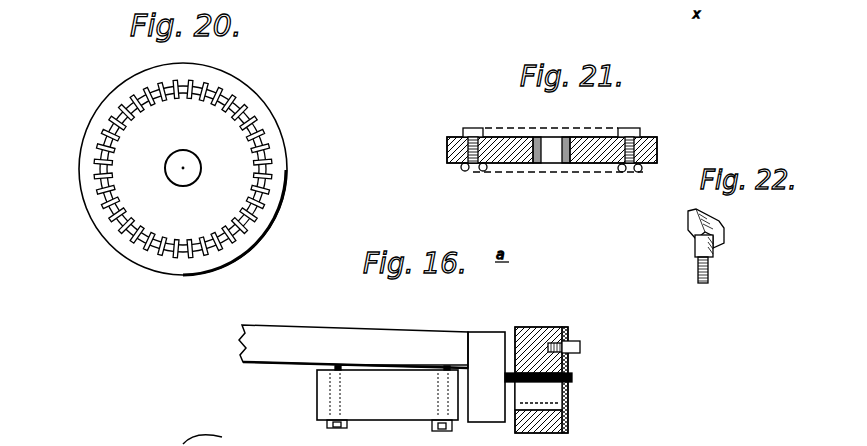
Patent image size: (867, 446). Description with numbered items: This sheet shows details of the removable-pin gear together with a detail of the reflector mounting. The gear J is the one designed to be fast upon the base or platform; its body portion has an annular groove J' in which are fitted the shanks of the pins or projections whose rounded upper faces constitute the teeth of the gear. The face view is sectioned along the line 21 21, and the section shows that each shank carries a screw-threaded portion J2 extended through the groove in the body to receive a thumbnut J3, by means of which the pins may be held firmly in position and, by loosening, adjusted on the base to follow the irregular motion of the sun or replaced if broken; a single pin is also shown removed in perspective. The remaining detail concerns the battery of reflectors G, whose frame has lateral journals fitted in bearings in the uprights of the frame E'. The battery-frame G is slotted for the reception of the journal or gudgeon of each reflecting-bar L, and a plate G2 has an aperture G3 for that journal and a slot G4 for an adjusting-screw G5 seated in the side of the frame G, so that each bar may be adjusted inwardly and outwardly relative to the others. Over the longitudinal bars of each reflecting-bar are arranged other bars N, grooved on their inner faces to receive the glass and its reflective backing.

In FIG. 20, the gear J is at (183, 169).
In FIG. 22, the gear J is at (672, 251).
In FIG. 20, the annular groove J' is at (207, 180).
In FIG. 21, the annular groove J' is at (556, 130).
In FIG. 22, the annular groove J' is at (724, 228).
In FIG. 20, the section line 21 is at (97, 158).
In FIG. 21, the thumbnuts J3 is at (640, 172).
In FIG. 22, the screw-threaded portion J2 is at (710, 272).
In FIG. 16A, the reflecting-bar L is at (441, 332).
In FIG. 16A, the bar N is at (387, 398).
In FIG. 16A, the battery of reflectors G is at (545, 326).
In FIG. 16A, the plate G2 is at (568, 413).
In FIG. 16A, the aperture G3 is at (550, 395).
In FIG. 16A, the slot G4 is at (568, 360).
In FIG. 16A, the adjusting-screw G5 is at (580, 347).
In FIG. 16A, the frame E' is at (557, 369).